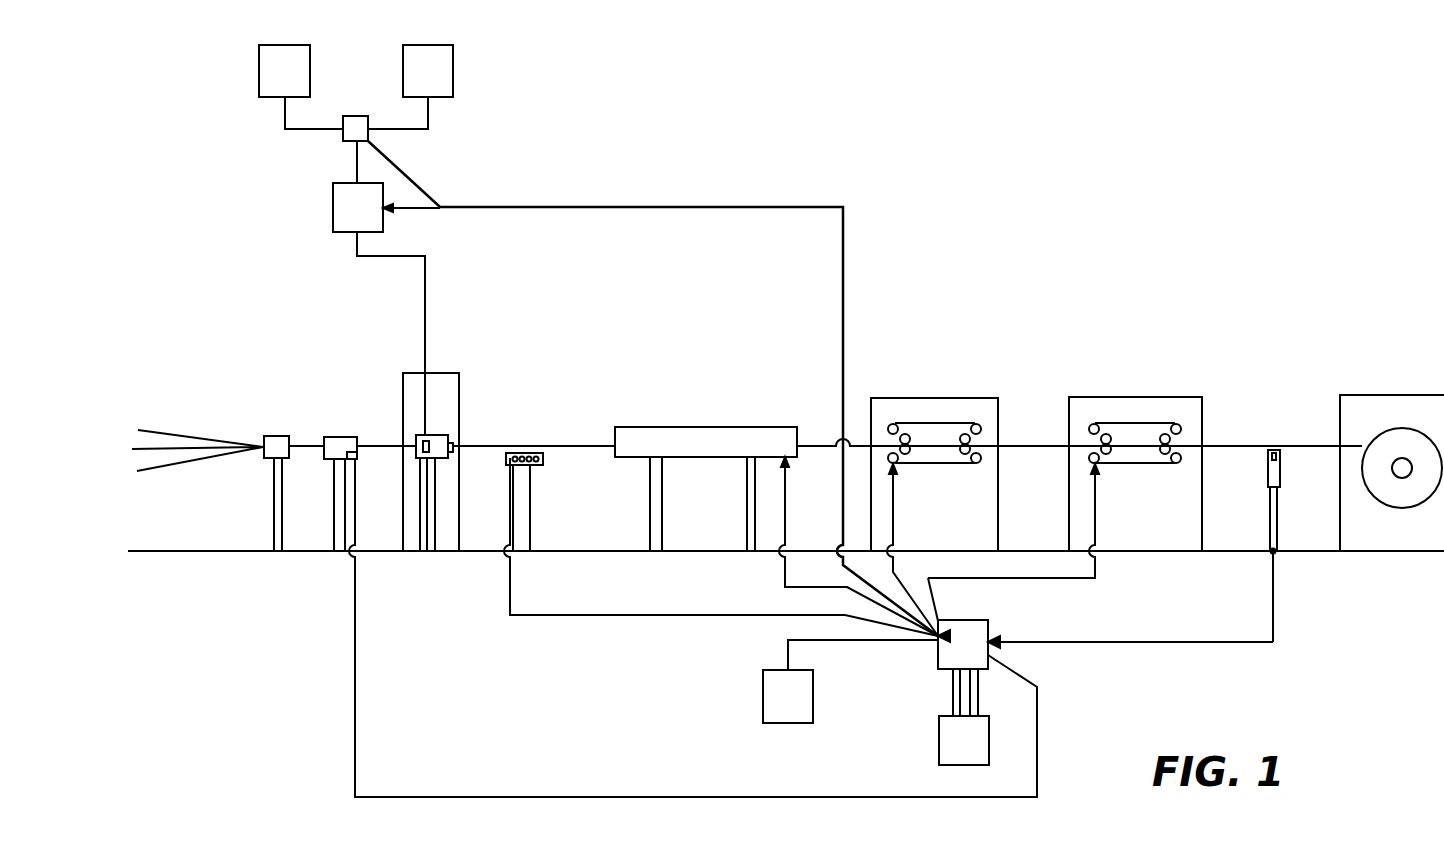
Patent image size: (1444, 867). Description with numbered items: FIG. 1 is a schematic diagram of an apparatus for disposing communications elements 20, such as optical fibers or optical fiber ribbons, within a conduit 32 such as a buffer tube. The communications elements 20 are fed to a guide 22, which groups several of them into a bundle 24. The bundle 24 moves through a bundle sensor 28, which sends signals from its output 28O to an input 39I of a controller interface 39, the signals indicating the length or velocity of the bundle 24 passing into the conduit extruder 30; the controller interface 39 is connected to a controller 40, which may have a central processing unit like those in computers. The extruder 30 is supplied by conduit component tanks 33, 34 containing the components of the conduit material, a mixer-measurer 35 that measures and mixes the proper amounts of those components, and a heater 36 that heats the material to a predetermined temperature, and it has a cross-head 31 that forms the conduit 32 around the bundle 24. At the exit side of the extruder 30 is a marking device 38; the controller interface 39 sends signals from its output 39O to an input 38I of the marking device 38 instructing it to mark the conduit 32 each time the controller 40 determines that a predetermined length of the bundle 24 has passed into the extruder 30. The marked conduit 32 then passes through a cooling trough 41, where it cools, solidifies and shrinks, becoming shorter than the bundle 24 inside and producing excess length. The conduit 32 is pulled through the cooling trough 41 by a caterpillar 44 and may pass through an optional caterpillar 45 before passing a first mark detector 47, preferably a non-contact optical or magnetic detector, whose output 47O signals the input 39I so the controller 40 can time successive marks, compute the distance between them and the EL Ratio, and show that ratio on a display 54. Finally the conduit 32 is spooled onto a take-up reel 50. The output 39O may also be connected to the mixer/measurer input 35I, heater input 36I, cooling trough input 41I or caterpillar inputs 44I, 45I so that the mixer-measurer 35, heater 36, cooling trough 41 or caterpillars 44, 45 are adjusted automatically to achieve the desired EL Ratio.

The communications elements 20 is at (210, 439).
The guide 22 is at (276, 436).
The bundle 24 is at (308, 446).
The bundle sensor 28 is at (337, 437).
The bundle sensor output 28O is at (358, 458).
The conduit extruder 30 is at (432, 437).
The cross-head 31 is at (448, 445).
The conduit 32 is at (477, 447).
The conduit component tank 33 is at (301, 87).
The conduit component tank 34 is at (410, 87).
The mixer-measurer 35 is at (345, 128).
The mixer/measurer input 35I is at (372, 140).
The heater 36 is at (379, 288).
The heater input 36I is at (393, 208).
The marking device 38 is at (543, 462).
The marking device input 38I is at (507, 460).
The controller interface 39 is at (967, 620).
The controller interface input 39I is at (990, 637).
The controller interface output 39O is at (936, 660).
The controller 40 is at (955, 765).
The cooling trough 41 is at (688, 431).
The cooling trough input 41I is at (785, 460).
The caterpillar 44 is at (975, 398).
The caterpillar input 44I is at (897, 470).
The optional caterpillar 45 is at (1133, 398).
The caterpillar input 45I is at (1097, 466).
The first mark detector 47 is at (1268, 472).
The mark detector output 47O is at (1276, 554).
The take-up reel 50 is at (1396, 436).
The display 54 is at (850, 681).